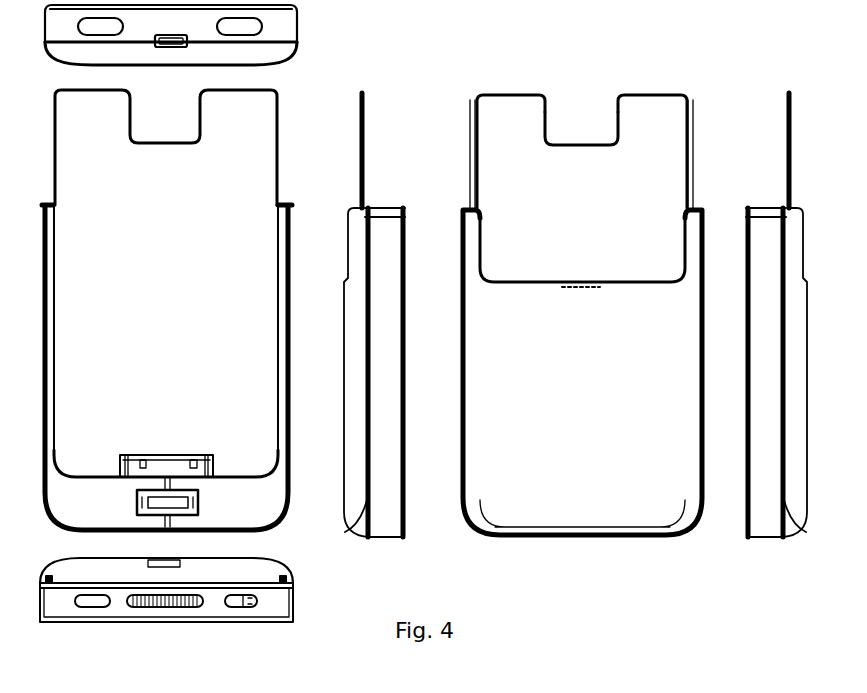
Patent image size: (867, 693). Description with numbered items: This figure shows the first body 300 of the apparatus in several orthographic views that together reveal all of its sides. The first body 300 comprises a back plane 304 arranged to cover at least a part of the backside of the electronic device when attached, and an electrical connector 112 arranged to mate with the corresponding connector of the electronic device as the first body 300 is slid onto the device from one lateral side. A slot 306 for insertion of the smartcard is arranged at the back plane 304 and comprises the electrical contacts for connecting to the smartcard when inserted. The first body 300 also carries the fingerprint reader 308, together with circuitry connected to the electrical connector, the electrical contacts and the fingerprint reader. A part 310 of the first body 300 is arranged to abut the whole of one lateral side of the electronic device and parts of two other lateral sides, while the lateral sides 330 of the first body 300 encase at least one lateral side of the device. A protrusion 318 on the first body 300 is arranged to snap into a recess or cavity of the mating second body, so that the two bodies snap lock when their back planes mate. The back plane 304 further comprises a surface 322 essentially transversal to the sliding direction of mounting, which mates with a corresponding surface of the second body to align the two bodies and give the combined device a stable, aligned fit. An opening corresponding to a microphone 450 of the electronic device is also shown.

The electrical connector 112 is at (203, 472).
The first body 300 is at (243, 520).
The back plane 304 is at (120, 185).
The slot 306 is at (645, 278).
The fingerprint reader 308 is at (158, 507).
The part 310 is at (243, 472).
The protrusion 318 is at (587, 283).
The surface 322 is at (613, 105).
The lateral sides 330 is at (55, 265).
The microphone 450 is at (257, 598).